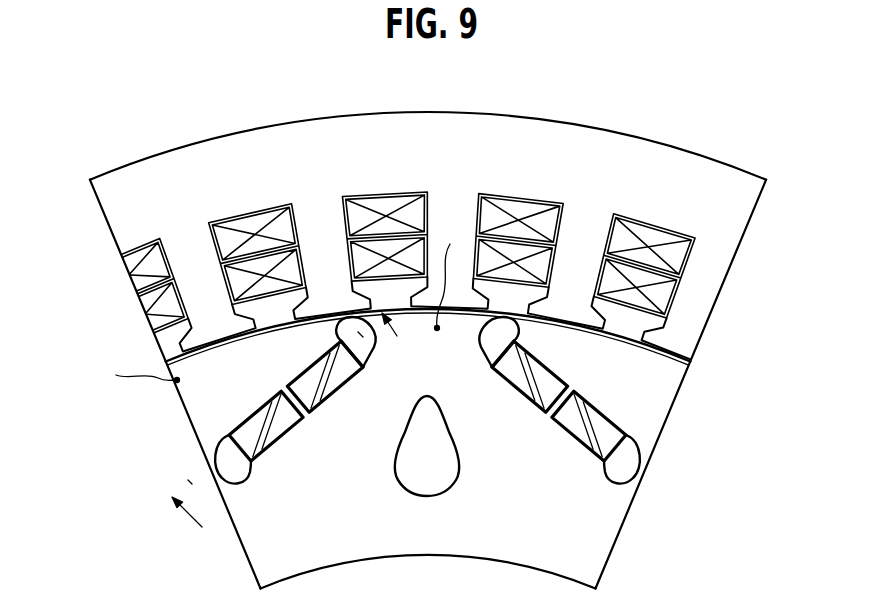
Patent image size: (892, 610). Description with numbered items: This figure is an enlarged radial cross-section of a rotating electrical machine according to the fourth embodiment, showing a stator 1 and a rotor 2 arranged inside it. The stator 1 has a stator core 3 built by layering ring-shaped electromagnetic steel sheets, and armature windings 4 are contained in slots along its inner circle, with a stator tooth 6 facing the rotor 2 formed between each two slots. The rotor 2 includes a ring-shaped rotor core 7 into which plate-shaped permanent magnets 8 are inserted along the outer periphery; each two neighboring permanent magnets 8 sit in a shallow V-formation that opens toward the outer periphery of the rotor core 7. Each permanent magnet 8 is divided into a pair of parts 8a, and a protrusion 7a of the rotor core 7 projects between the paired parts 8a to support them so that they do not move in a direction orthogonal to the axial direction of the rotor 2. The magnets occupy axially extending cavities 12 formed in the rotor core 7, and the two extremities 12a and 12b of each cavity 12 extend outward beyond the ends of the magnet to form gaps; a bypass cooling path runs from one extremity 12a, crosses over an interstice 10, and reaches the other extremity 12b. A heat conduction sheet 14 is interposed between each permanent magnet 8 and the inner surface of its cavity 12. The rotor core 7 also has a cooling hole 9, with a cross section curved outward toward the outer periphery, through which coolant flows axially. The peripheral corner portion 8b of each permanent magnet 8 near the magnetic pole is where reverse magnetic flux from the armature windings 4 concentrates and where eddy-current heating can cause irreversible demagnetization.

The stator 1 is at (697, 138).
The rotor 2 is at (660, 471).
The stator core 3 is at (195, 160).
The armature winding 4 is at (523, 213).
The stator tooth 6 is at (333, 300).
The rotor core 7 is at (578, 524).
The protrusion 7a is at (306, 420).
The permanent magnet 8 is at (568, 506).
The part of permanent magnet 8a is at (522, 380).
The peripheral corner portion 8b is at (334, 341).
The cooling hole 9 is at (402, 470).
The interstice 10 is at (310, 402).
The cavity 12 is at (223, 455).
The extremity of cavity 12a is at (244, 483).
The extremity of cavity 12b is at (373, 340).
The heat conduction sheet 14 is at (585, 400).